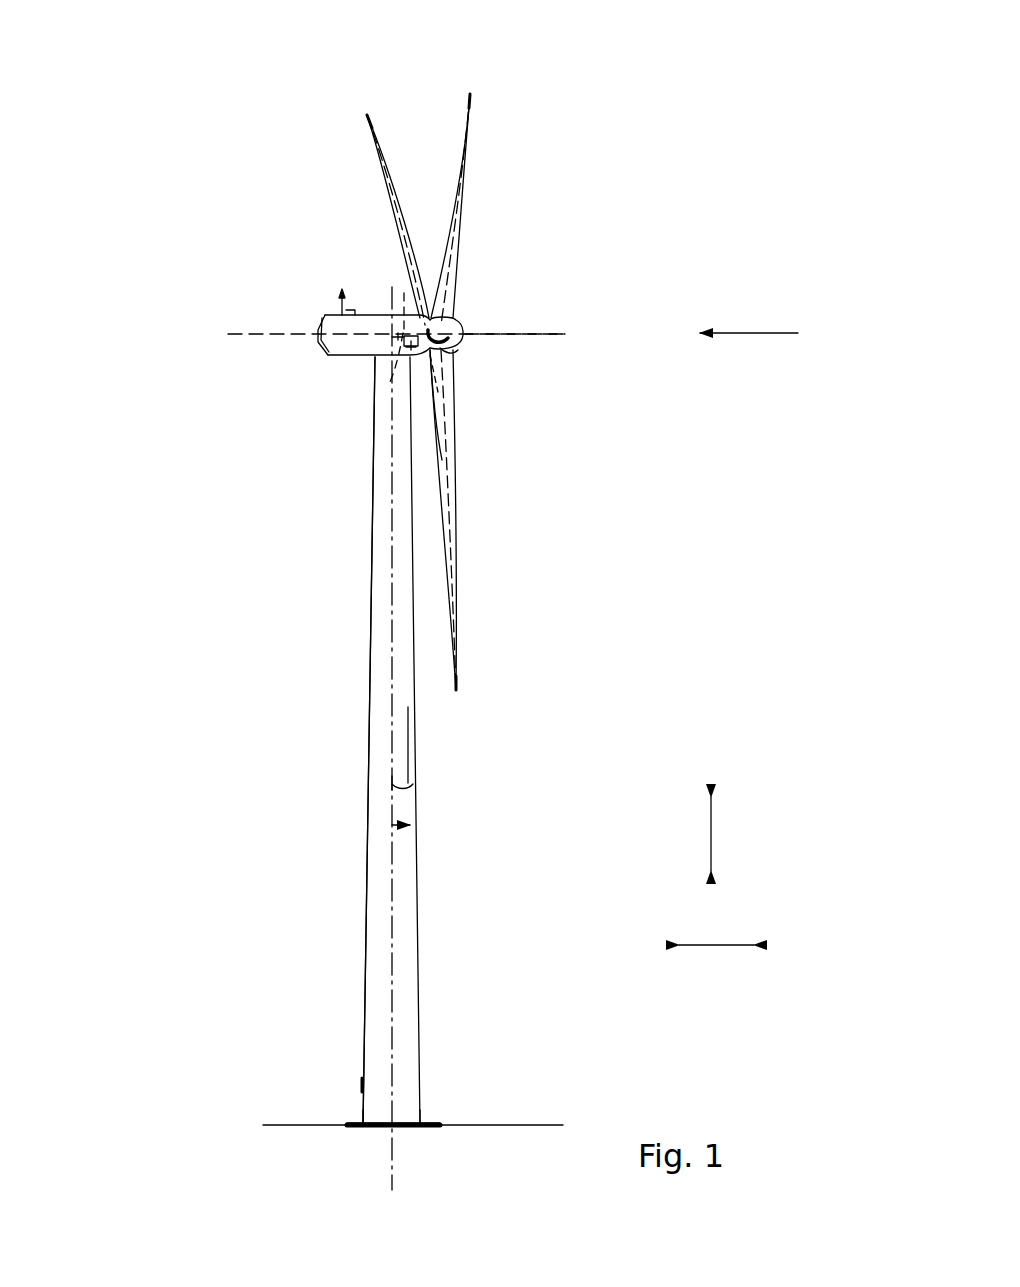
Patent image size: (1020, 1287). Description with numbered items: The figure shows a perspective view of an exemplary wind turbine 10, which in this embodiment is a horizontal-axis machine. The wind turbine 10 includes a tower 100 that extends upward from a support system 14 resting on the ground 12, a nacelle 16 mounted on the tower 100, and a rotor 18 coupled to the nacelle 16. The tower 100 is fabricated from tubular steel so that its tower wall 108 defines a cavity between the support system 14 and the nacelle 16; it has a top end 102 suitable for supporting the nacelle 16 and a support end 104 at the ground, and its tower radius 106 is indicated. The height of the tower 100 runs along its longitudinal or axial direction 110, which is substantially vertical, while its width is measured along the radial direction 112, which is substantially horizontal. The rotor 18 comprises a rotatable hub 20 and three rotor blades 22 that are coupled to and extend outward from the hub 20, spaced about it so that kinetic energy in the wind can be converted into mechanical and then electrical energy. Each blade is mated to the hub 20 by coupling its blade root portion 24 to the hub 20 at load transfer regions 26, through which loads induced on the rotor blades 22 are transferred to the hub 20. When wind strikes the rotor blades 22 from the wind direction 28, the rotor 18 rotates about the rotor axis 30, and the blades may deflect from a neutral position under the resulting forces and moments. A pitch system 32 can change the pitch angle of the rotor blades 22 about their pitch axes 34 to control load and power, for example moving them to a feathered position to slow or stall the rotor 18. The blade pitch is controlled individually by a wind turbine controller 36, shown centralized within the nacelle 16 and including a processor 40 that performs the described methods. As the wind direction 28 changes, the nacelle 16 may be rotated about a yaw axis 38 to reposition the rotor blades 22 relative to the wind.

The wind turbine 10 is at (150, 122).
The ground 12 is at (288, 1124).
The support system 14 is at (355, 1124).
The nacelle 16 is at (346, 357).
The rotor 18 is at (470, 236).
The rotatable hub 20 is at (462, 328).
The rotor blades 22 is at (464, 142).
The blade root portion 24 is at (458, 440).
The load transfer regions 26 is at (450, 360).
The wind direction 28 is at (766, 333).
The rotor axis 30 is at (532, 336).
The pitch system 32 is at (437, 390).
The pitch axes 34 is at (361, 118).
The wind turbine controller 36 is at (390, 382).
The yaw axis 38 is at (416, 786).
The processor 40 is at (404, 293).
The tower 100 is at (388, 715).
The top end 102 is at (377, 360).
The support end 104 is at (408, 1122).
The tower radius 106 is at (402, 826).
The tower wall 108 is at (367, 902).
The axial direction 110 is at (713, 841).
The radial direction 112 is at (718, 944).